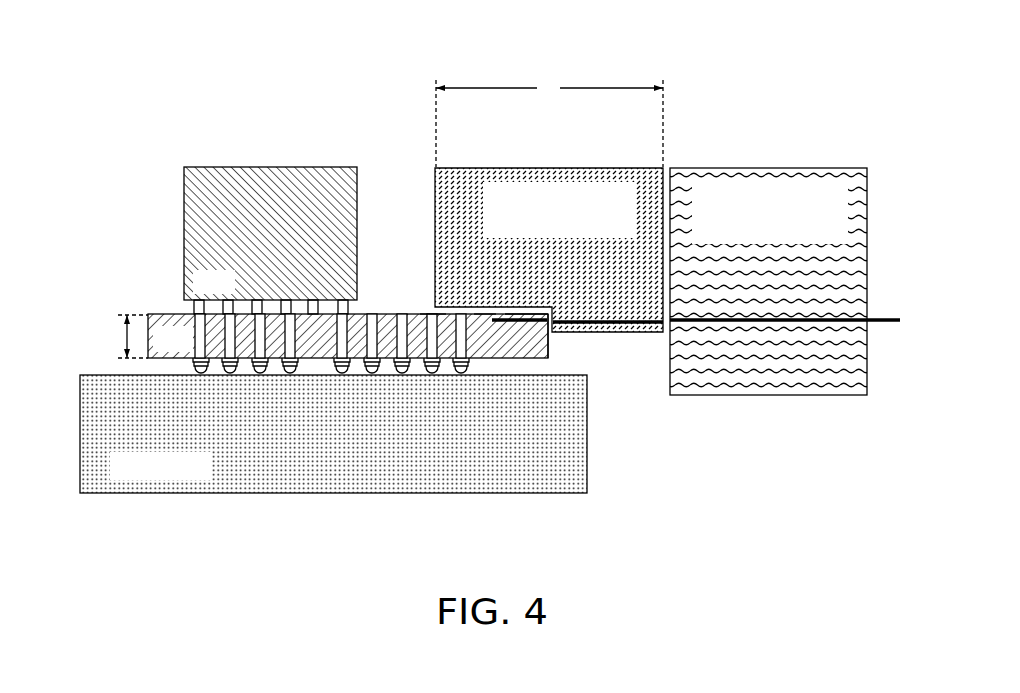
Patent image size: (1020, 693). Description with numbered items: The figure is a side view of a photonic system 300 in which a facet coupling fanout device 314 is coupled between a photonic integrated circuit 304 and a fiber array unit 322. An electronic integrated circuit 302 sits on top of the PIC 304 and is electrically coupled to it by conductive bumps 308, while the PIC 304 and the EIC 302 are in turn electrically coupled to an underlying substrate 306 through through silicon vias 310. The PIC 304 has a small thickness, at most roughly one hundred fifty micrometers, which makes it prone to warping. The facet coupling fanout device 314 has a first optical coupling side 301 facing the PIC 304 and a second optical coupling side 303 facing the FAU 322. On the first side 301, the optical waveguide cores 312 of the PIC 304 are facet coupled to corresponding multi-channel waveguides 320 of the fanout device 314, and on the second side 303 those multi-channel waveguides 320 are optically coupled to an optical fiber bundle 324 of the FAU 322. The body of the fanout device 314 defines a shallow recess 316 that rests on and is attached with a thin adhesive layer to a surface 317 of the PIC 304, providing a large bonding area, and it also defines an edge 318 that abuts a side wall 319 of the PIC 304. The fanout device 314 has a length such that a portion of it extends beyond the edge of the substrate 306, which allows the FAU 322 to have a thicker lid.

The photonic system 300 is at (695, 49).
The first optical coupling side 301 is at (372, 135).
The electronic integrated circuit 302 is at (222, 167).
The second optical coupling side 303 is at (695, 132).
The photonic integrated circuit 304 is at (155, 313).
The substrate 306 is at (80, 428).
The conductive bumps 308 is at (314, 301).
The through silicon vias 310 is at (343, 375).
The optical waveguide cores 312 is at (517, 319).
The facet coupling fanout device 314 is at (545, 167).
The shallow recess 316 is at (432, 313).
The surface of the PIC 317 is at (485, 313).
The edge 318 is at (555, 327).
The side wall of the PIC 319 is at (549, 335).
The multi-channel waveguides 320 is at (628, 324).
The fiber array unit 322 is at (796, 167).
The optical fiber bundle 324 is at (884, 320).